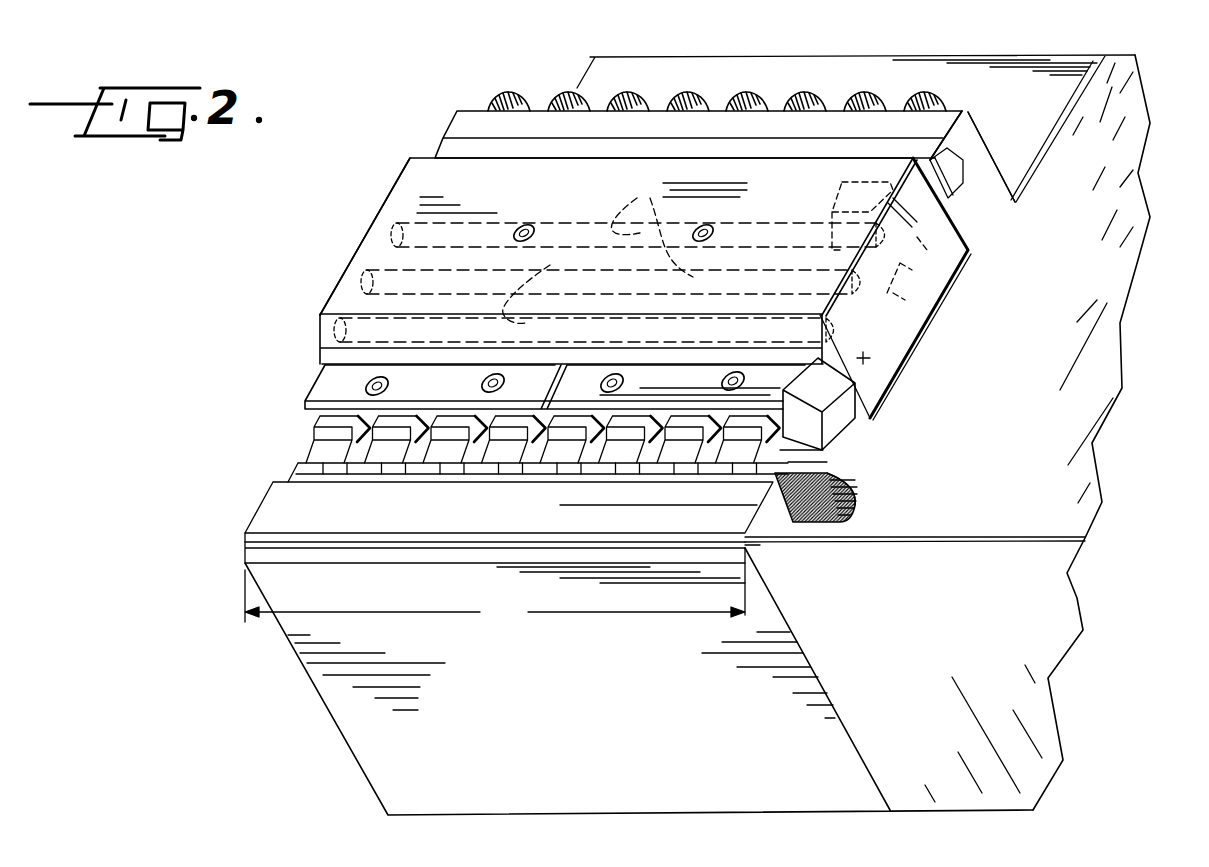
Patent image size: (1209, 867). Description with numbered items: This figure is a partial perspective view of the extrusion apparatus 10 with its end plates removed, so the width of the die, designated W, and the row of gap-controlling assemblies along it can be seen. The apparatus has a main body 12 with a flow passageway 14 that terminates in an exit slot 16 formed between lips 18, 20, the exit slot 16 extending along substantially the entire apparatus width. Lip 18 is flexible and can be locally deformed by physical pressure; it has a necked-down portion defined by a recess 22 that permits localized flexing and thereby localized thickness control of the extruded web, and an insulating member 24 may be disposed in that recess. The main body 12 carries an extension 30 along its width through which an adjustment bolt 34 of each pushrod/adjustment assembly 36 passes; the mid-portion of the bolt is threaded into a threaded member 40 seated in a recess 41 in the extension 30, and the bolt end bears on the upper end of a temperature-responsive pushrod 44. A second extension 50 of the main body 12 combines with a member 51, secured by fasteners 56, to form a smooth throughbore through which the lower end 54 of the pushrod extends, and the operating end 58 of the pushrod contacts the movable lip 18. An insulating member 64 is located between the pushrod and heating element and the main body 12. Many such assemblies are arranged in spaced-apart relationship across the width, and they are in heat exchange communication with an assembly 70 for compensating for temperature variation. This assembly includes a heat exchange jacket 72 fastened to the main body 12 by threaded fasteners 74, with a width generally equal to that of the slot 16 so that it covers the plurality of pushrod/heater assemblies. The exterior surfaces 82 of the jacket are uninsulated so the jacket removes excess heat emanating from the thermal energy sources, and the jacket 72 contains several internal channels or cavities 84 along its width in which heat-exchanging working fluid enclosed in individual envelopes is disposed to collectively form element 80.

The extrusion apparatus 10 is at (412, 87).
The main body 12 is at (1118, 364).
The flow passageway 14 is at (957, 540).
The exit slot 16 is at (343, 545).
The lip 18 is at (763, 528).
The lip 20 is at (756, 560).
The recess 22 is at (830, 532).
The insulating member 24 is at (843, 487).
The extension 30 is at (970, 112).
The adjustment bolt 34 is at (567, 87).
The pushrod/adjustment assembly 36 is at (905, 229).
The threaded member 40 is at (598, 147).
The recess 41 is at (955, 168).
The temperature-responsive pushrod 44 is at (870, 310).
The extension 50 is at (842, 466).
The member 51 is at (318, 386).
The lower end of the pushrod 54 is at (348, 448).
The fasteners 56 is at (482, 382).
The operating end of the pushrod 58 is at (393, 493).
The insulating member 64 is at (858, 361).
The assembly for compensating for temperature variation 70 is at (397, 180).
The heat exchange jacket 72 is at (380, 223).
The threaded fasteners 74 is at (530, 227).
The element 80 is at (390, 241).
The exterior surfaces of the heat exchange jacket 82 is at (422, 163).
The internal channels or cavities 84 is at (598, 247).